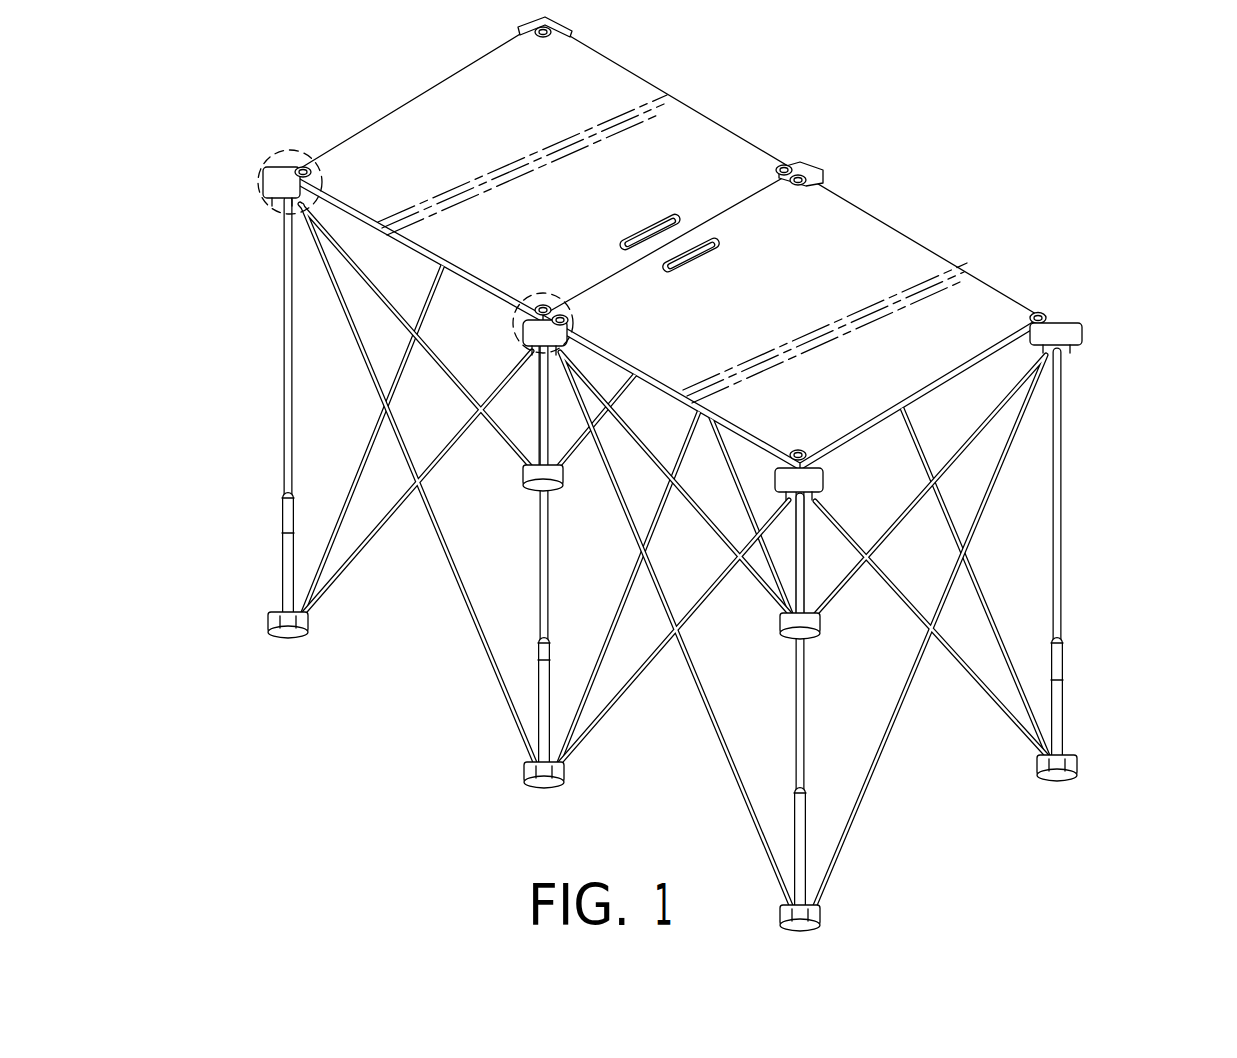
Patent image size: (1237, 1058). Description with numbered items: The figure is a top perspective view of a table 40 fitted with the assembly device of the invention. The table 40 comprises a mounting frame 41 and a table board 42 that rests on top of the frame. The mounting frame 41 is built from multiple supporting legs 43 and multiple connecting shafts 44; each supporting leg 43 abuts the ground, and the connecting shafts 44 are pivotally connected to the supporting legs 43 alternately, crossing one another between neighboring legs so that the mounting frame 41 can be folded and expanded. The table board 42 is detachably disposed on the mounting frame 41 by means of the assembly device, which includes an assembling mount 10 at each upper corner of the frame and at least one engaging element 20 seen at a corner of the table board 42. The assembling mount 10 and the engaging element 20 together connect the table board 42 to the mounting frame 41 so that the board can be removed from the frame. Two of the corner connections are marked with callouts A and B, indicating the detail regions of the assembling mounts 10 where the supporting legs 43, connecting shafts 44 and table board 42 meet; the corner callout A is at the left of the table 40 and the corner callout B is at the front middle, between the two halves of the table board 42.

The assembling mount 10 is at (704, 474).
The engaging element 20 is at (1036, 298).
The table 40 is at (668, 243).
The mounting frame 41 is at (704, 485).
The table board 42 is at (673, 96).
The supporting leg 43 is at (287, 467).
The connecting shaft 44 is at (365, 452).
The detail A corner connector A is at (278, 157).
The detail B corner connector B is at (577, 322).